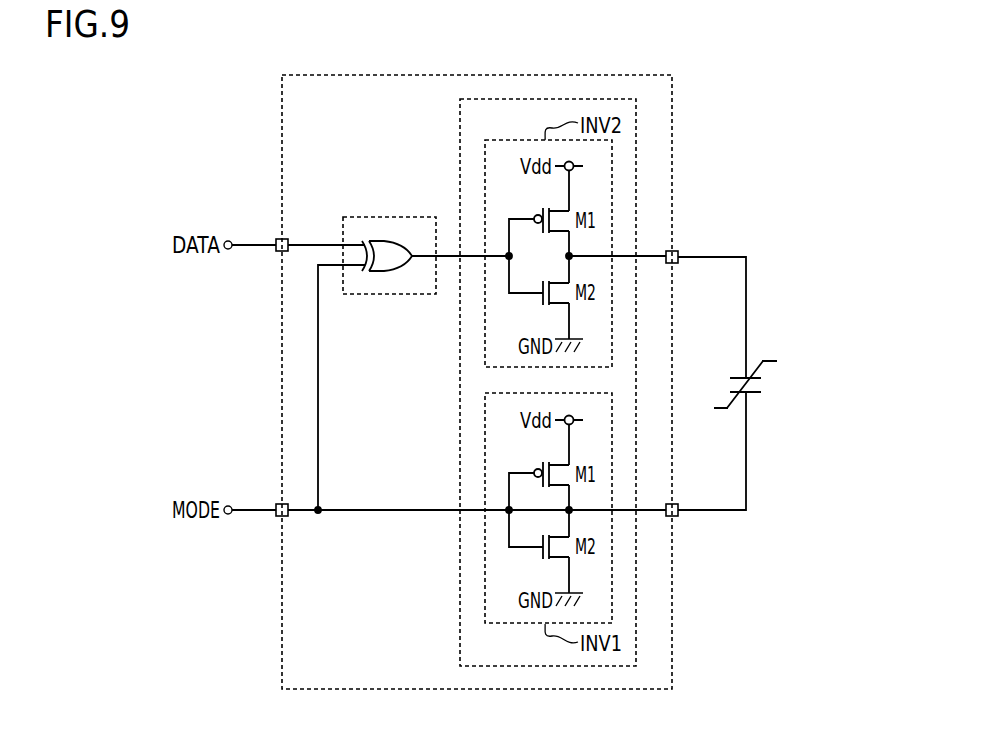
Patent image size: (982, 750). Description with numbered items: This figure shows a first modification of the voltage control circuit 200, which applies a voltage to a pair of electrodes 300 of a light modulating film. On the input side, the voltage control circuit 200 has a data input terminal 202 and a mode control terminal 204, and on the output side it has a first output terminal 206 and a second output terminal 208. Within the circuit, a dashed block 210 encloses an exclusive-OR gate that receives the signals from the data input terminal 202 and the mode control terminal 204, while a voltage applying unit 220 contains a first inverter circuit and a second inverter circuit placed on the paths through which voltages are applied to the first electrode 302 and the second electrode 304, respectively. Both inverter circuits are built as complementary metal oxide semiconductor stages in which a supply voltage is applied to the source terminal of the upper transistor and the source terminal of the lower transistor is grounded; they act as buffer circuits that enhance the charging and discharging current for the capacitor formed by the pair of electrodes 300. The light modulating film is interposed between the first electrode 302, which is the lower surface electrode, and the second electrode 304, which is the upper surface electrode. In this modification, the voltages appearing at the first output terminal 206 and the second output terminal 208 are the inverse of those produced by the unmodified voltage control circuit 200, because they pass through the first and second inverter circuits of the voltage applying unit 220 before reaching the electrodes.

The voltage control circuit 200 is at (478, 690).
The data input terminal 202 is at (279, 252).
The mode control terminal 204 is at (279, 517).
The first output terminal 206 is at (677, 517).
The second output terminal 208 is at (677, 253).
The exclusive OR gate 210 is at (390, 295).
The voltage applying unit 220 is at (460, 153).
The pair of electrodes 300 is at (806, 393).
The first electrode 302 is at (765, 392).
The second electrode 304 is at (765, 375).